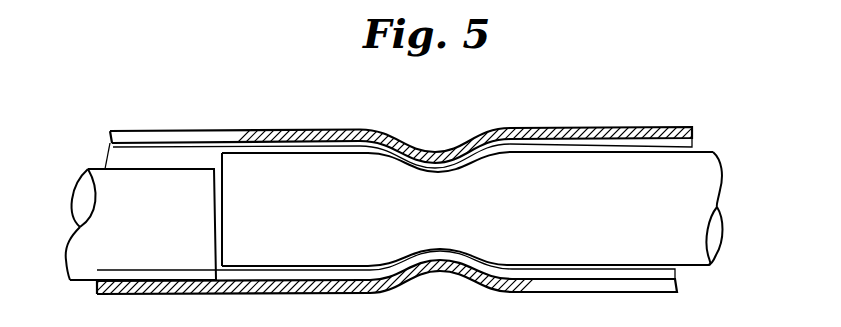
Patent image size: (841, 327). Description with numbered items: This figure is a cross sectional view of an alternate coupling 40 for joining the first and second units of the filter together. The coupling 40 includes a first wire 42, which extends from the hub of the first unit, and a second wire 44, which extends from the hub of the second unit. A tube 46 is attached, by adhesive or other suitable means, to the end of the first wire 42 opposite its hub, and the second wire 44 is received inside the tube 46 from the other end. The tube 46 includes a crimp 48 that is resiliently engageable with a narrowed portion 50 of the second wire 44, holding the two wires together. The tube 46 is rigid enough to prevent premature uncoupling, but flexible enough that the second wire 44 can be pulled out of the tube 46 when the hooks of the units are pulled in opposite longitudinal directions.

The coupling 40 is at (240, 100).
The first wire 42 is at (108, 187).
The second wire 44 is at (695, 183).
The tube 46 is at (624, 128).
The crimp 48 is at (442, 153).
The narrowed portion 50 is at (420, 233).